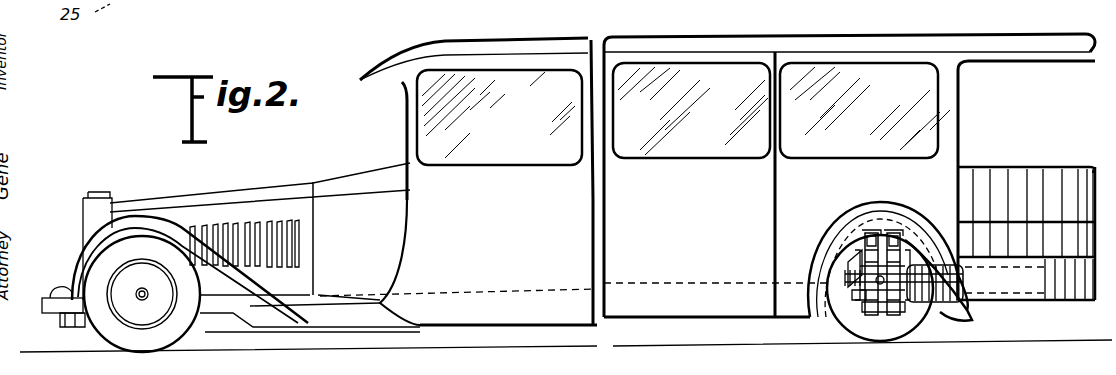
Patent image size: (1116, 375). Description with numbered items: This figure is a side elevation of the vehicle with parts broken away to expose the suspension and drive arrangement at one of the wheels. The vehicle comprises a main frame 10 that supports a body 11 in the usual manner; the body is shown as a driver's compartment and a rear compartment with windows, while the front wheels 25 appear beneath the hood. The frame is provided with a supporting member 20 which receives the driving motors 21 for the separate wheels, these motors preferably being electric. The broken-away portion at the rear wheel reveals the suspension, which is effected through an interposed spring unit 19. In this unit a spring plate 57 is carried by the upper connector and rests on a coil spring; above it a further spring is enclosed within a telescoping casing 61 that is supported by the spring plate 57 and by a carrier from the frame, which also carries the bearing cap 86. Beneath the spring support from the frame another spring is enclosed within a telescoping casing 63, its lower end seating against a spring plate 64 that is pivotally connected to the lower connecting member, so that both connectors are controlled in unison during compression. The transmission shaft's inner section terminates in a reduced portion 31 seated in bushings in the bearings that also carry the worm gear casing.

The main frame 10 is at (463, 305).
The body 11 is at (955, 100).
The spring unit 19 is at (845, 275).
The supporting member 20 is at (942, 265).
The driving motors 21 is at (935, 322).
The front wheels 25 is at (167, 332).
The reduced portion 31 is at (892, 323).
The spring plate 57 is at (860, 260).
The telescoping casing 61 is at (905, 240).
The telescoping casing 63 is at (862, 290).
The spring plate 64 is at (867, 304).
The bearing cap 86 is at (886, 234).